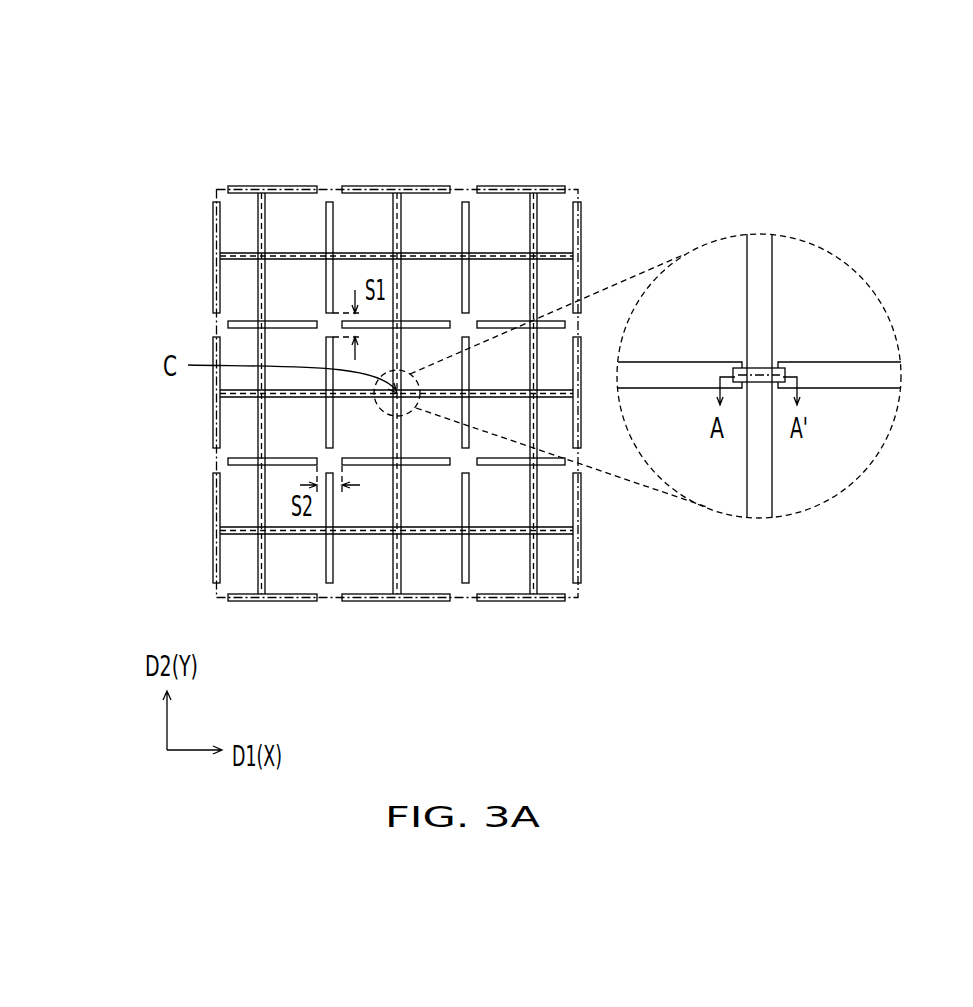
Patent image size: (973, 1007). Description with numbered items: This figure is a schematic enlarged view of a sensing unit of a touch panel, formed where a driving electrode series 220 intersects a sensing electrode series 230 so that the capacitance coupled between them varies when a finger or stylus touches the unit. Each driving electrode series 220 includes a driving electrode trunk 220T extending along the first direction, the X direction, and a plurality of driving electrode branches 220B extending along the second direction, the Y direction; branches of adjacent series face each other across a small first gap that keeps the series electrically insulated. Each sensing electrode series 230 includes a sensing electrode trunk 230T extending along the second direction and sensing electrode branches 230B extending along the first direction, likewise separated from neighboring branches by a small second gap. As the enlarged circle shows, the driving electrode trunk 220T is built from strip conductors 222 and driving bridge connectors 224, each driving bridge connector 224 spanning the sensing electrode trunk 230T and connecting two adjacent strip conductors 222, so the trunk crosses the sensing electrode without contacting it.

The driving electrode series 220 is at (680, 166).
The driving electrode trunk 220T is at (548, 252).
The driving electrode branches 220B is at (480, 214).
The strip conductors 222 is at (855, 377).
The driving bridge connectors 224 is at (783, 367).
The sensing electrode series 230 is at (355, 108).
The sensing electrode trunk 230T is at (258, 221).
The sensing electrode branches 230B is at (290, 320).